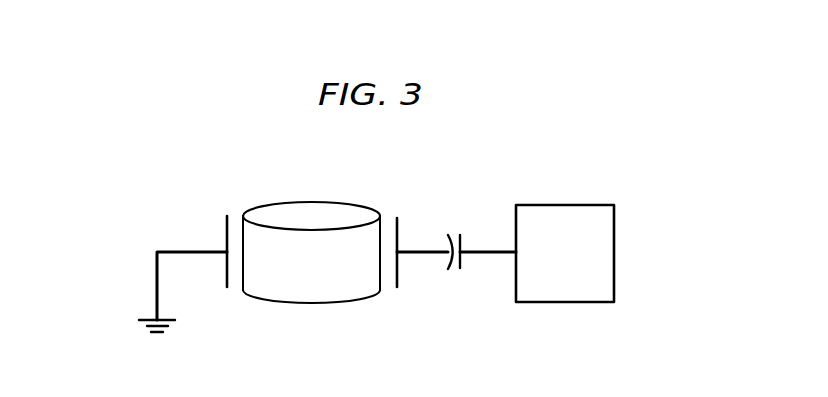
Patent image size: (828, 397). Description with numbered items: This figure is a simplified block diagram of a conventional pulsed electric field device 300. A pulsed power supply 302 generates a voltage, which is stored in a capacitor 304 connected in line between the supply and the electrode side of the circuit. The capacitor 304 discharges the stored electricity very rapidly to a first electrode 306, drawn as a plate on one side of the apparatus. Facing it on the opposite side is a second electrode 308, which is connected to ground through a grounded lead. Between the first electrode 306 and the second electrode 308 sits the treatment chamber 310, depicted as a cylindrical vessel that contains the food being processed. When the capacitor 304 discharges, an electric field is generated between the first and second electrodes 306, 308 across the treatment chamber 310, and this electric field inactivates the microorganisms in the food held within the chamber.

The PEF device 300 is at (363, 185).
The pulsed power supply 302 is at (561, 204).
The capacitor 304 is at (451, 269).
The first electrode 306 is at (398, 221).
The second electrode 308 is at (225, 231).
The treatment chamber 310 is at (306, 201).